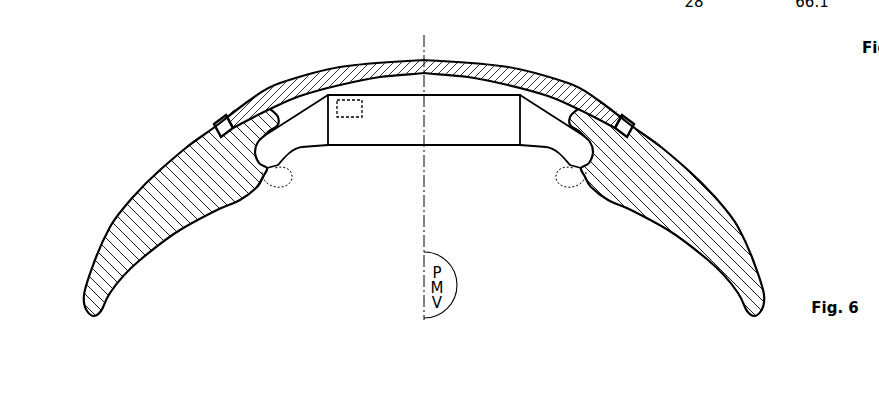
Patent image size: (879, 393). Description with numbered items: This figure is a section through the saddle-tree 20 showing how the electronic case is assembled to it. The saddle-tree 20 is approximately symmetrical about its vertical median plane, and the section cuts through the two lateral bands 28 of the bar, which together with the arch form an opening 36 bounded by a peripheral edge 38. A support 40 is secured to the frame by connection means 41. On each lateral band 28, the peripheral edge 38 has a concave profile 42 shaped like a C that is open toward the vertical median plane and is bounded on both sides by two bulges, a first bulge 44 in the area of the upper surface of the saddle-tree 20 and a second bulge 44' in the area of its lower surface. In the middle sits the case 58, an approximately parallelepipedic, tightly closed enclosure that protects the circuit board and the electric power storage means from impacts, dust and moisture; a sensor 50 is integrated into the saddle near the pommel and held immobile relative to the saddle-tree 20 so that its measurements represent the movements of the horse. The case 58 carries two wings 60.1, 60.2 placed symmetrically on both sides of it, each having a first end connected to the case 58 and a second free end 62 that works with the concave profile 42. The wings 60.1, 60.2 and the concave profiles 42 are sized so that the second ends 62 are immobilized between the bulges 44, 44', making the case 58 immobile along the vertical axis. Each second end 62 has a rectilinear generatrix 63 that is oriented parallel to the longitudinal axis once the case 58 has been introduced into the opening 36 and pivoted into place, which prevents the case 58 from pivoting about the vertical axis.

The saddle-tree 20 is at (122, 93).
The lateral band 28 is at (140, 213).
The opening 36 is at (410, 182).
The peripheral edge 38 is at (575, 162).
The support 40 is at (438, 92).
The connection means 41 is at (233, 116).
The concave profile 42 is at (267, 193).
The first bulge 44 is at (424, 68).
The second bulge 44' is at (417, 229).
The sensor 50 is at (350, 96).
The case 58 is at (451, 149).
The wing 60.1 is at (305, 150).
The wing 60.2 is at (548, 108).
The second free end 62 is at (262, 149).
The rectilinear generatrix 63 is at (262, 176).